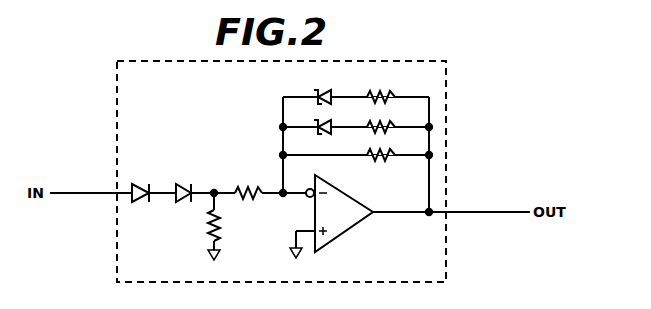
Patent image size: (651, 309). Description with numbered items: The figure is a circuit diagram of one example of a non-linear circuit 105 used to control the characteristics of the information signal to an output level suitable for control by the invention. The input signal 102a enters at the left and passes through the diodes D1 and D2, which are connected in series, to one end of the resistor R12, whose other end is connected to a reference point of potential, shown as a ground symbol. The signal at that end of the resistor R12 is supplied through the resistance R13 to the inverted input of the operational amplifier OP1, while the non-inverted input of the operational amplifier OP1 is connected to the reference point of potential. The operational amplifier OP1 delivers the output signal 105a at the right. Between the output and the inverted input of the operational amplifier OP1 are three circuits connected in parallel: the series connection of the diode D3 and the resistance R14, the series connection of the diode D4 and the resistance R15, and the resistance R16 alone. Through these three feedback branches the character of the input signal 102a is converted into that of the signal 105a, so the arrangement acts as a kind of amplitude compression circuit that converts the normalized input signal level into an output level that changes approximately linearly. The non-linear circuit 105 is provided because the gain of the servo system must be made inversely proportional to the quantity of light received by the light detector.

The input signal 102a is at (96, 190).
The non-linear circuit 105 is at (435, 80).
The output signal 105a is at (470, 210).
The diode D1 is at (139, 180).
The diode D2 is at (182, 180).
The diode D3 is at (330, 85).
The diode D4 is at (334, 117).
The resistor R12 is at (199, 226).
The resistance R13 is at (248, 183).
The resistance R14 is at (377, 96).
The resistance R15 is at (378, 127).
The resistance R16 is at (380, 155).
The operational amplifier OP1 is at (345, 223).